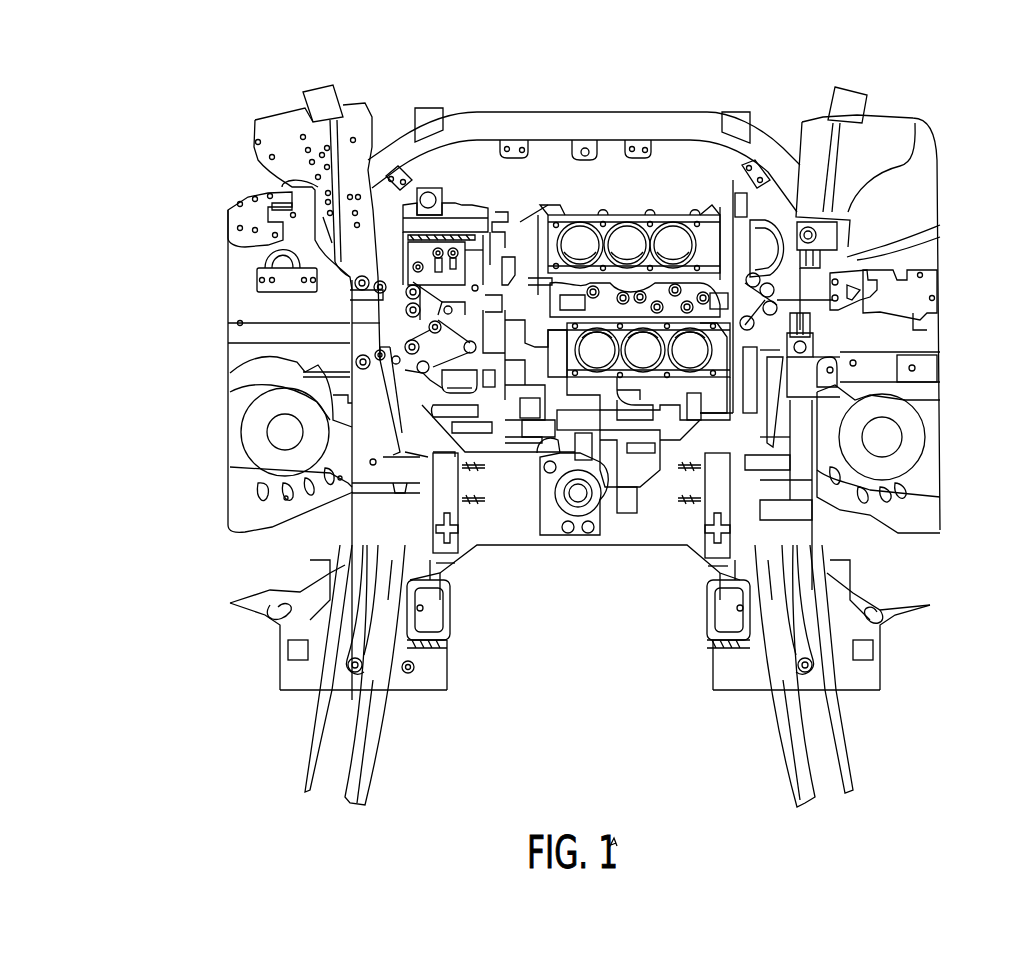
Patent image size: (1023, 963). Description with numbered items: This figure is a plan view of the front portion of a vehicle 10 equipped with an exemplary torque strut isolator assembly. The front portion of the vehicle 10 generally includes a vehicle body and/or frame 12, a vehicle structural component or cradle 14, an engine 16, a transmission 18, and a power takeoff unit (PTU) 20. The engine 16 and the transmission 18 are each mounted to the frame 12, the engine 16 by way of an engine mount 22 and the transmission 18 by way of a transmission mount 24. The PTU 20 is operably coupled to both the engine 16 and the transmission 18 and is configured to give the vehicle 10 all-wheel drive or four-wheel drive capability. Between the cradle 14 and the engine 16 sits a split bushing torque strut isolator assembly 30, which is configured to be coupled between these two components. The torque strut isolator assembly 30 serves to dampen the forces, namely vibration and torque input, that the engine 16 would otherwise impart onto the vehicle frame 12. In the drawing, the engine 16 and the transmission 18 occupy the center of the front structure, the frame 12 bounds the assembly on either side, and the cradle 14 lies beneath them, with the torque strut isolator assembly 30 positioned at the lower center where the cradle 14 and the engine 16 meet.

The vehicle 10 is at (924, 85).
The vehicle body and/or frame 12 is at (937, 323).
The vehicle structural component or cradle 14 is at (505, 548).
The engine 16 is at (613, 192).
The transmission 18 is at (478, 192).
The power takeoff unit (PTU) 20 is at (667, 442).
The engine mount 22 is at (823, 272).
The transmission mount 24 is at (348, 328).
The split bushing torque strut isolator assembly 30 is at (600, 533).